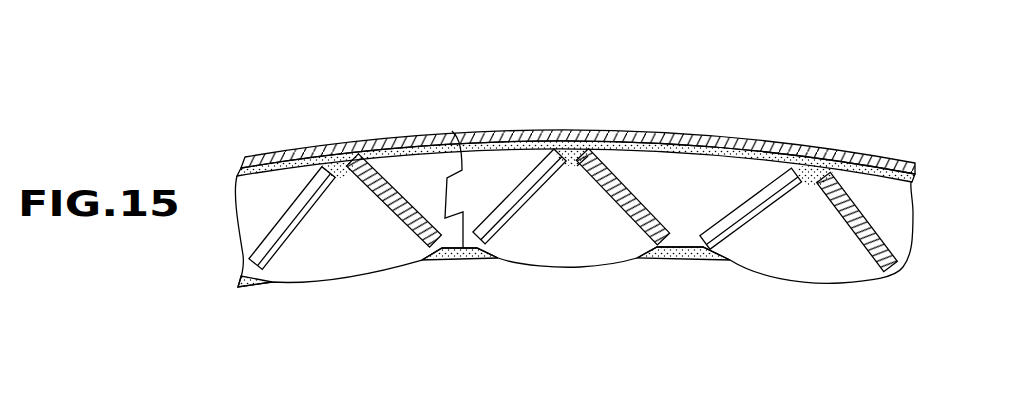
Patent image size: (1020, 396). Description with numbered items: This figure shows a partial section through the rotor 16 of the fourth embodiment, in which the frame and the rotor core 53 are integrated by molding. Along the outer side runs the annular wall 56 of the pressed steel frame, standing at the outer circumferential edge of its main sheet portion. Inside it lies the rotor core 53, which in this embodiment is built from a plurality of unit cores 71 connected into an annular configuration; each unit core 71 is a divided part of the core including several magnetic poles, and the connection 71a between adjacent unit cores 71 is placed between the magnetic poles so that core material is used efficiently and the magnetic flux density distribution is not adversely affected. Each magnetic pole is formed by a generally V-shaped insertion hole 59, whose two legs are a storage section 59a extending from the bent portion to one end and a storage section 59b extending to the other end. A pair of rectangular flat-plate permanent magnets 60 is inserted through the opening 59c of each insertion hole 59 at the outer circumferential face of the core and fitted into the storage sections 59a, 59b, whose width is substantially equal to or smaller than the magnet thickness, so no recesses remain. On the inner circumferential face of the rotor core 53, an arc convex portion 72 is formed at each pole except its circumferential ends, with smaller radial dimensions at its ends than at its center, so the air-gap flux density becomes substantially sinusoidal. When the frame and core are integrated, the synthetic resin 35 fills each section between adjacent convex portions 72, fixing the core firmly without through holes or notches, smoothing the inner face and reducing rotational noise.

The rotor 16 is at (298, 129).
The unit core 71 is at (410, 137).
The connection 71a is at (453, 134).
The annular wall 56 is at (720, 133).
The insertion hole 59 is at (567, 131).
The storage section 59a is at (525, 133).
The storage section 59b is at (642, 131).
The opening 59c is at (583, 133).
The synthetic resin 35 is at (813, 160).
The rotor core 53 is at (277, 290).
The arc convex portion 72 is at (342, 285).
The permanent magnet 60 is at (498, 215).